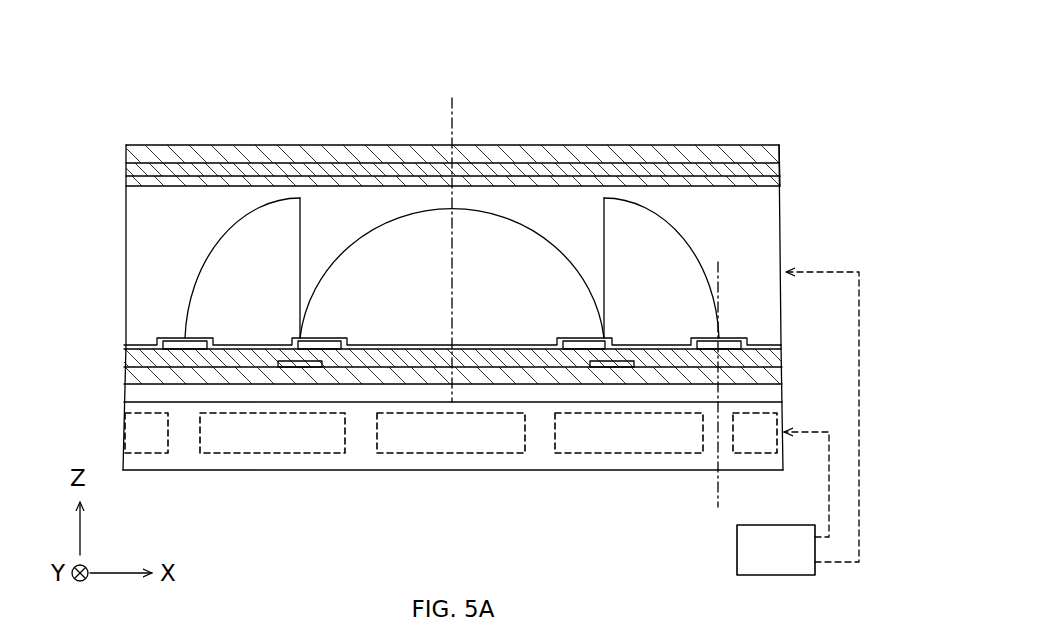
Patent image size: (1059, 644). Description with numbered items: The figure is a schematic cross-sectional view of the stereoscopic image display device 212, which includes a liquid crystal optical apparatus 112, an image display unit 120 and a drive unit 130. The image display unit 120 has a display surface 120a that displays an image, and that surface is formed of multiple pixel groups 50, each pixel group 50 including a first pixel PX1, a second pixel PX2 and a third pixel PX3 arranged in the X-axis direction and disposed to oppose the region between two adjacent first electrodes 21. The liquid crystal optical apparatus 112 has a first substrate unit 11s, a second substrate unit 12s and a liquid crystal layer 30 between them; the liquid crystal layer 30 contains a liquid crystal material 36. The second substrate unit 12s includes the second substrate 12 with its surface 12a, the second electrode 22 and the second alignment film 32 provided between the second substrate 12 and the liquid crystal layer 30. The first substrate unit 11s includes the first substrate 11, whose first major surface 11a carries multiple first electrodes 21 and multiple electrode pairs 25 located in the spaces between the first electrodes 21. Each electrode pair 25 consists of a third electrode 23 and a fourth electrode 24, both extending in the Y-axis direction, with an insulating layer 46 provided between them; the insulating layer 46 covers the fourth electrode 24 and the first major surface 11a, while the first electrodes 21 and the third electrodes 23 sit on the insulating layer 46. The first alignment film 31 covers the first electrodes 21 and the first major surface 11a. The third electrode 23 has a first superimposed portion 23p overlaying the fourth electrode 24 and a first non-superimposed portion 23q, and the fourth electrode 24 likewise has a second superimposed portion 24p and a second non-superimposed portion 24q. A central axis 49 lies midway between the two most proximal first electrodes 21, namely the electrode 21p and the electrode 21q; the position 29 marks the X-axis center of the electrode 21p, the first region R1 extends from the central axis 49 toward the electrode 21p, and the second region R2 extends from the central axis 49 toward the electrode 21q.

The second substrate 12 is at (145, 155).
The liquid crystal optical apparatus 112 is at (706, 144).
The second electrode 22 is at (133, 168).
The second alignment film 32 is at (131, 182).
The lower surface of substrate 12 12a is at (742, 164).
The second substrate unit 12s is at (784, 166).
The liquid crystal layer 30 is at (390, 268).
The liquid crystal material 36 is at (146, 232).
The first electrode 21 is at (450, 304).
The electrode 21q is at (166, 340).
The electrode 21p is at (738, 342).
The first alignment film 31 is at (141, 345).
The insulating layer 46 is at (141, 358).
The first substrate 11 is at (141, 378).
The first major surface 11a is at (762, 365).
The first substrate unit 11s is at (89, 407).
The display surface 120a is at (752, 402).
The image display unit 120 is at (160, 473).
The pixel group 50 is at (451, 487).
The first pixel PX1 is at (336, 471).
The second pixel PX2 is at (438, 460).
The third pixel PX3 is at (598, 466).
The fourth electrode 24 is at (472, 489).
The second superimposed portion 24p is at (600, 366).
The second non-superimposed portion 24q is at (632, 366).
The third electrode 23 is at (447, 483).
The first superimposed portion 23p is at (595, 350).
The first non-superimposed portion 23q is at (565, 350).
The electrode pair 25 is at (310, 527).
The central axis 49 is at (456, 113).
The position 29 is at (722, 497).
The drive unit 130 is at (775, 555).
The first region R1 is at (683, 103).
The second region R2 is at (310, 144).
The stereoscopic image display device 212 is at (598, 83).